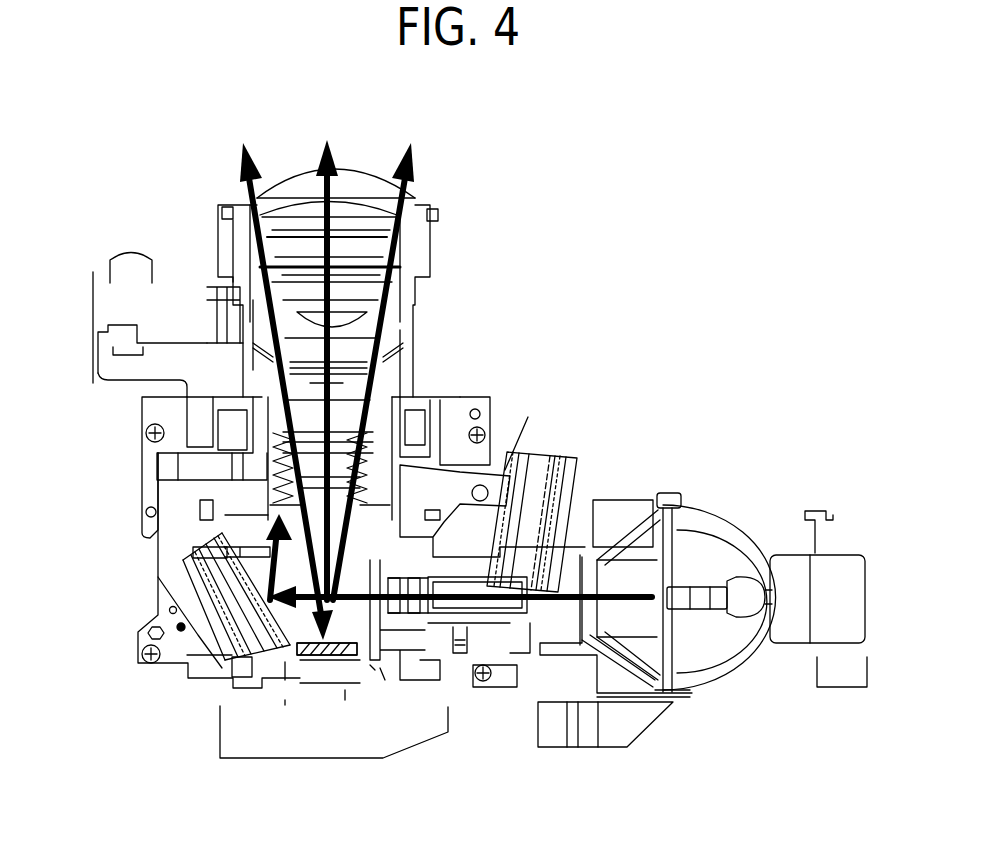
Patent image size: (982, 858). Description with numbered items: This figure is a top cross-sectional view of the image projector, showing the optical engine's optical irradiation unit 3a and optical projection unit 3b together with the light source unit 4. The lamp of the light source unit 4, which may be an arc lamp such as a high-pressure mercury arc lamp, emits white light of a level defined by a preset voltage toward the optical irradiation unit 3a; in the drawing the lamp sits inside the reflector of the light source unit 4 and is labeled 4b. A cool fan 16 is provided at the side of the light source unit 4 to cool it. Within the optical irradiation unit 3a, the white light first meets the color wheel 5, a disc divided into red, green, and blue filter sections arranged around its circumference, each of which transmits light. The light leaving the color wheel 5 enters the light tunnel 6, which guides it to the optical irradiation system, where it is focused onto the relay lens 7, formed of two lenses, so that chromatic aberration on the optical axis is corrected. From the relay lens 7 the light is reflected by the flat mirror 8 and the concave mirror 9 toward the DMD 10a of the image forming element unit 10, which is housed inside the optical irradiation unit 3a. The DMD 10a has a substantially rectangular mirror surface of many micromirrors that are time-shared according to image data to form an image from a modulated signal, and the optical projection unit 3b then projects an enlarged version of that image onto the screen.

The optical irradiation unit 3a is at (118, 470).
The optical projection unit 3b is at (405, 336).
The light source unit 4 is at (735, 664).
The lamp 4b is at (748, 588).
The color wheel 5 is at (586, 484).
The light tunnel 6 is at (484, 603).
The relay lens 7 is at (392, 605).
The flat mirror 8 is at (253, 588).
The concave mirror 9 is at (222, 530).
The image forming element unit 10 is at (327, 660).
The DMD 10a is at (327, 649).
The cool fan 16 is at (613, 735).